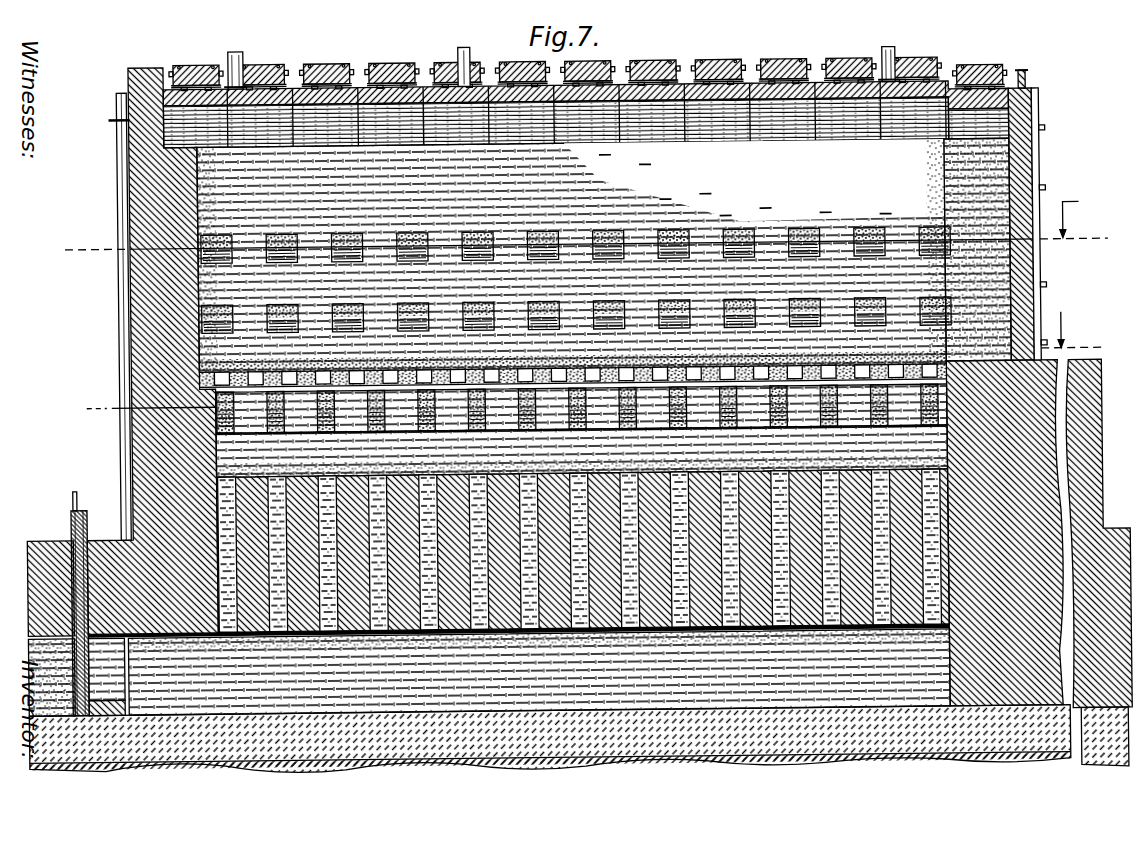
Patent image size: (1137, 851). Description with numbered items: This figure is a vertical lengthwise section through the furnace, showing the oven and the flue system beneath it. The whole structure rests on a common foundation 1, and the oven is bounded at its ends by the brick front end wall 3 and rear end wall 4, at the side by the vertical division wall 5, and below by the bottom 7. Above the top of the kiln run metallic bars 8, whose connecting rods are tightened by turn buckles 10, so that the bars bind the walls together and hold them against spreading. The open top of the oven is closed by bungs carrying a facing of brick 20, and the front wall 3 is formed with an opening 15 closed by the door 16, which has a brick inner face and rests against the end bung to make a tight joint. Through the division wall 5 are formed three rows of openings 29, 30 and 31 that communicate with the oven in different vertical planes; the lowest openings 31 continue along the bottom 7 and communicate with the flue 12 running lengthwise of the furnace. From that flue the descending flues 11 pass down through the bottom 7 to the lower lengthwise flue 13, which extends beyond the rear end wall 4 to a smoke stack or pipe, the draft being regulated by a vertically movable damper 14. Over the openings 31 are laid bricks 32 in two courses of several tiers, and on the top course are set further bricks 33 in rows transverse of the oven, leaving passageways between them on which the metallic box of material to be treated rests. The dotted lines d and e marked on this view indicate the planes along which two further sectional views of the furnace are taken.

The foundation 1 is at (296, 772).
The front end wall 3 is at (1002, 170).
The rear end wall 4 is at (134, 187).
The vertical division wall 5 is at (232, 172).
The bottom 7 is at (245, 396).
The metallic bars 8 is at (117, 96).
The turn buckles 10 is at (372, 68).
The descending flues 11 is at (262, 498).
The lengthwise flue 12 is at (216, 454).
The lower lengthwise flue 13 is at (38, 652).
The damper 14 is at (68, 512).
The opening 15 is at (1081, 213).
The door 16 is at (1037, 186).
The facing of brick 20 is at (440, 90).
The openings 29 is at (200, 246).
The openings 30 is at (200, 320).
The openings 31 is at (220, 411).
The bricks 32 is at (225, 393).
The bricks 33 is at (220, 379).
The dotted line d d is at (587, 365).
The dotted line e e is at (587, 244).